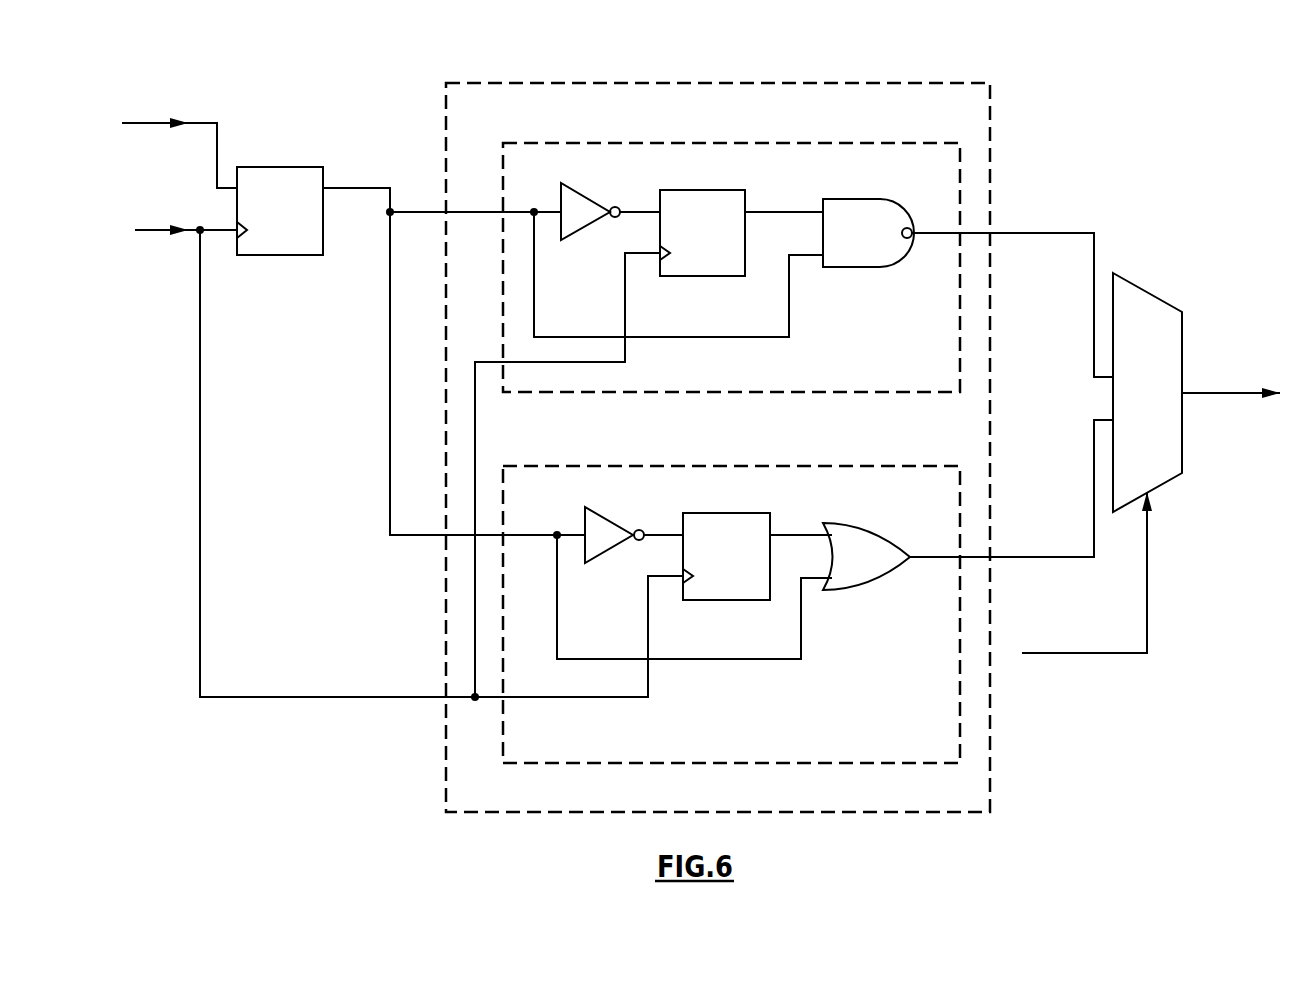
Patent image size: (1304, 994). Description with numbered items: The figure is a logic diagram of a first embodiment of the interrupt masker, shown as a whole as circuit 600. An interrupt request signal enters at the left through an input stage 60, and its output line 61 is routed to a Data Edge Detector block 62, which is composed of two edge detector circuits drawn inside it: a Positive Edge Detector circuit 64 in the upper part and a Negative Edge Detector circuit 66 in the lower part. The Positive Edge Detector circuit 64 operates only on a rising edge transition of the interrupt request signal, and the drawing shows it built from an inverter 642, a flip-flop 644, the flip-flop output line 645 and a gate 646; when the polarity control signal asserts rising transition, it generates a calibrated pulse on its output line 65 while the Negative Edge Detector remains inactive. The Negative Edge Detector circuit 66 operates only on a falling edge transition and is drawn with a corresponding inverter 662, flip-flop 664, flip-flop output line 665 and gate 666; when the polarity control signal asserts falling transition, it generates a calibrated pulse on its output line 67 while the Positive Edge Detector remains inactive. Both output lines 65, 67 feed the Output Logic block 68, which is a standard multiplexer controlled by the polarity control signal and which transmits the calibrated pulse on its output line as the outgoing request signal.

The request polarity control circuit 600 is at (1161, 101).
The input flip-flop 60 is at (270, 157).
The flip-flop output signal line 61 is at (341, 180).
The polarity processing block 62 is at (1000, 102).
The Positive Edge Detector circuit 64 is at (566, 141).
The inverter 642 is at (582, 186).
The flip-flop 644 is at (691, 189).
The flip-flop output line 645 is at (773, 205).
The NAND gate 646 is at (877, 187).
The Negative Edge Detector circuit 66 is at (799, 759).
The inverter 662 is at (603, 512).
The flip-flop 664 is at (713, 512).
The flip-flop output line 665 is at (791, 529).
The OR gate 666 is at (839, 514).
The output line 65 is at (1055, 227).
The OR gate output line 67 is at (1020, 550).
The multiplexer 68 is at (1165, 293).